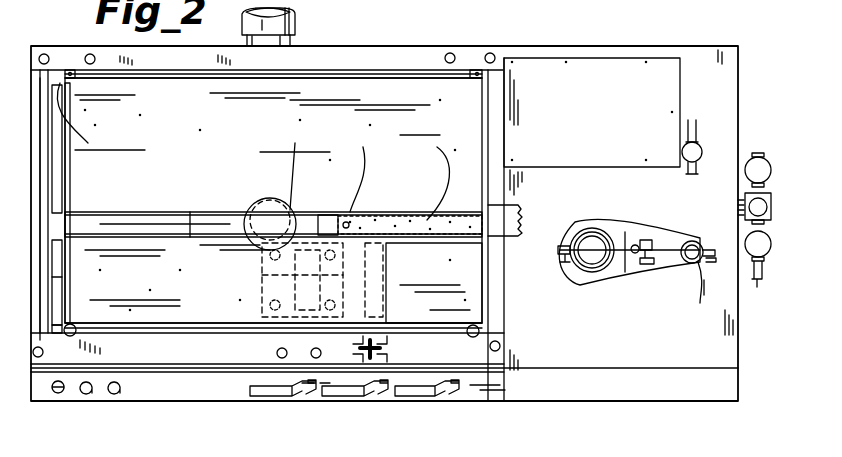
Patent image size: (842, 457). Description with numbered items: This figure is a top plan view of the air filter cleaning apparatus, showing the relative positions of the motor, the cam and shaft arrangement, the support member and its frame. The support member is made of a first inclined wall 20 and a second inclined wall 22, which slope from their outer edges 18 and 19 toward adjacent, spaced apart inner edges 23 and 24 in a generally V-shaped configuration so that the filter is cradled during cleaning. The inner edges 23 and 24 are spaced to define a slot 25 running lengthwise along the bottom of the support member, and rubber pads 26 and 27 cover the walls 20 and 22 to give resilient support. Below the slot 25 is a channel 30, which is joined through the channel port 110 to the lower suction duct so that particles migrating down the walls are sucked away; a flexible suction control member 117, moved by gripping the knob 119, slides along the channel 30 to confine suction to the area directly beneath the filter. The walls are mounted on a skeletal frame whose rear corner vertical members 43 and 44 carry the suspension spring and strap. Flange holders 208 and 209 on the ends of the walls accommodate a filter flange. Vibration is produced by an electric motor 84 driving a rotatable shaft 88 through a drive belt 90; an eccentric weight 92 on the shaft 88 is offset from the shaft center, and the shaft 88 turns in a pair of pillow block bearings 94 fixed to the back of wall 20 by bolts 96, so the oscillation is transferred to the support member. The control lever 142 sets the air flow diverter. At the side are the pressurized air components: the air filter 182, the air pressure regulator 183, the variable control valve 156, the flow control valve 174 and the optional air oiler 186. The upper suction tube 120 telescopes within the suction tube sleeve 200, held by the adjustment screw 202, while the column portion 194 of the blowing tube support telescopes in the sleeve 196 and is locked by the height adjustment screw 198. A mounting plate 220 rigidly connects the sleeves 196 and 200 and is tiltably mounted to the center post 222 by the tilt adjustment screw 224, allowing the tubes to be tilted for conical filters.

The outer edge 18 is at (443, 327).
The outer edge 19 is at (395, 80).
The first inclined wall 20 is at (252, 332).
The second inclined wall 22 is at (162, 77).
The inner edge 23 is at (100, 218).
The inner edge 24 is at (190, 232).
The slot 25 is at (228, 223).
The rubber pad 26 is at (217, 313).
The rubber pad 27 is at (330, 88).
The channel 30 is at (163, 220).
The vertical member 43 is at (53, 328).
The vertical member 44 is at (86, 125).
The electric motor 84 is at (398, 350).
The rotatable shaft 88 is at (383, 228).
The drive belt 90 is at (398, 312).
The eccentric weight 92 is at (415, 264).
The pillow block bearings 94 is at (235, 287).
The bolts 96 is at (322, 215).
The channel port 110 is at (295, 143).
The suction control member 117 is at (437, 147).
The knob 119 is at (363, 147).
The upper suction tube 120 is at (590, 232).
The control lever 142 is at (423, 392).
The variable control valve 156 is at (340, 392).
The flow control valve 174 is at (263, 397).
The air filter 182 is at (757, 157).
The air pressure regulator 183 is at (760, 207).
The air oiler 186 is at (765, 253).
The column portion 194 is at (695, 252).
The sleeve 196 is at (698, 242).
The height adjustment screw 198 is at (708, 268).
The suction tube sleeve 200 is at (597, 237).
The adjustment screw 202 is at (552, 267).
The flange holder 208 is at (53, 277).
The flange holder 209 is at (43, 100).
The mounting plate 220 is at (605, 270).
The center post 222 is at (637, 283).
The tilt adjustment screw 224 is at (643, 270).